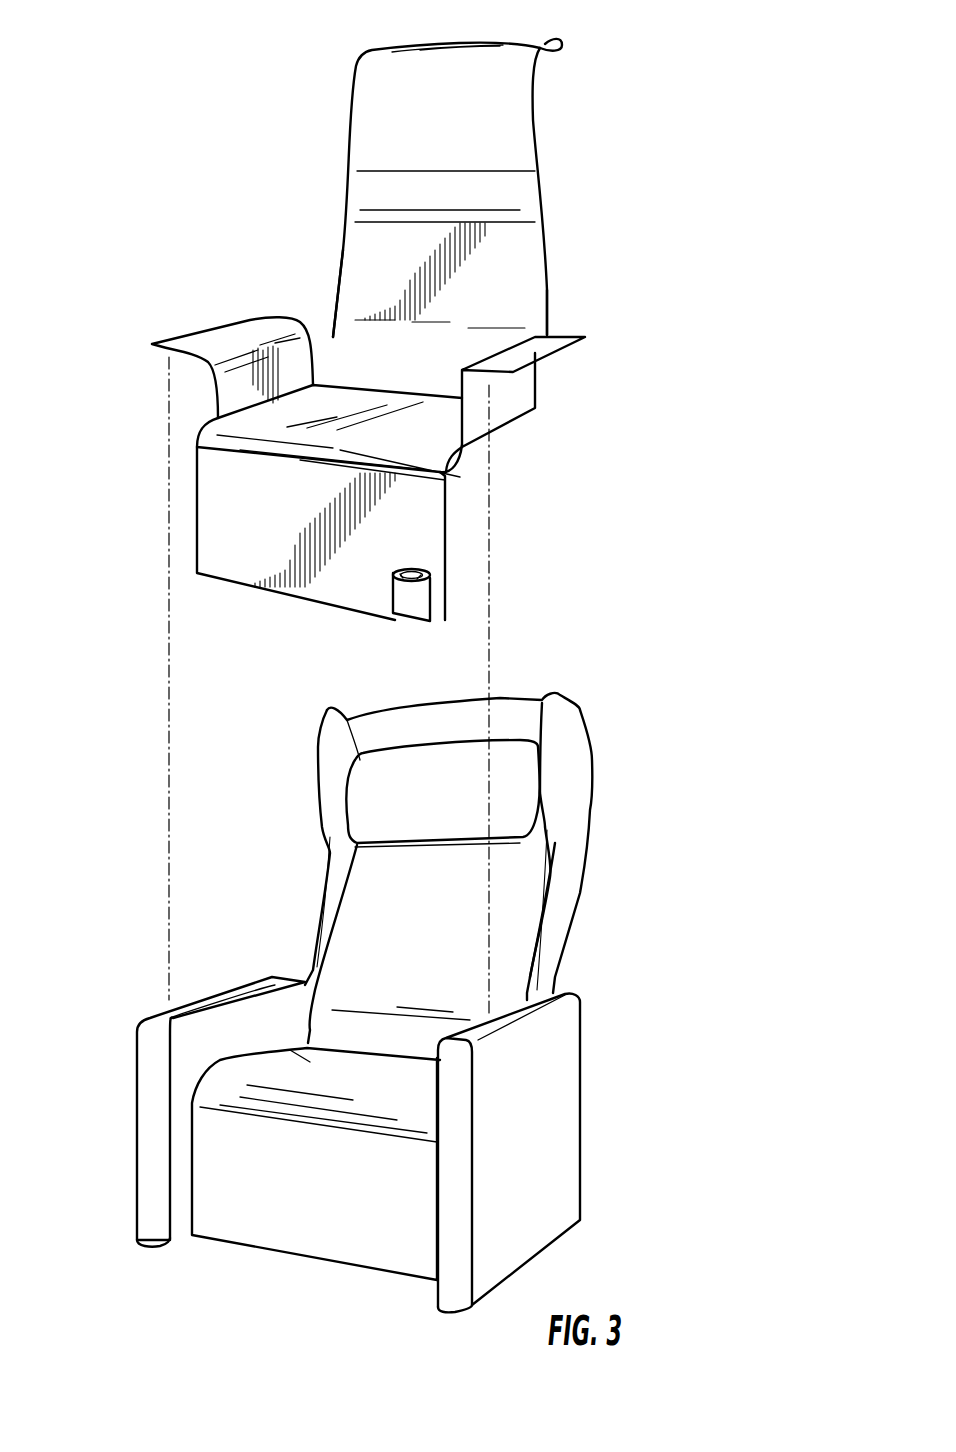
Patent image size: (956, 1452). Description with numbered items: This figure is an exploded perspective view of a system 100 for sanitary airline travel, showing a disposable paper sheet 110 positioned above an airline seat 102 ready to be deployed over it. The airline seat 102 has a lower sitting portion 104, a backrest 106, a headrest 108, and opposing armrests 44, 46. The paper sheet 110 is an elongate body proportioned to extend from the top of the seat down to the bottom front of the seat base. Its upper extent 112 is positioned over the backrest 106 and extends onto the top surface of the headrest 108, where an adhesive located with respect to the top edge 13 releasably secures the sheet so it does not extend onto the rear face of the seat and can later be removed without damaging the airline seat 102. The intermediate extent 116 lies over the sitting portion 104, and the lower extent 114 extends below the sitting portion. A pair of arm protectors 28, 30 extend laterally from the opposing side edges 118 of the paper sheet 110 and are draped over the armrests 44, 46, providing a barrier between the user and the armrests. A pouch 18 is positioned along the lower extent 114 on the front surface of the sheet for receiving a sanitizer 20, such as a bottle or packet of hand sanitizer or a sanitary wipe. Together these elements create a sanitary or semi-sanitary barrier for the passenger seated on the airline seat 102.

The system for sanitary airline travel 100 is at (133, 158).
The top edge 13 is at (545, 44).
The upper extent 112 is at (497, 153).
The disposable paper sheet 110 is at (483, 250).
The opposing side edges 118 is at (342, 260).
The arm protector 28 is at (208, 328).
The arm protector 30 is at (537, 345).
The intermediate extent 116 is at (307, 402).
The lower extent 114 is at (247, 551).
The sanitizer 20 is at (407, 568).
The pouch 18 is at (432, 600).
The airline seat 102 is at (612, 900).
The headrest 108 is at (505, 765).
The backrest 106 is at (383, 903).
The lower sitting portion 104 is at (302, 1055).
The armrest 44 is at (172, 1004).
The armrest 46 is at (498, 1018).